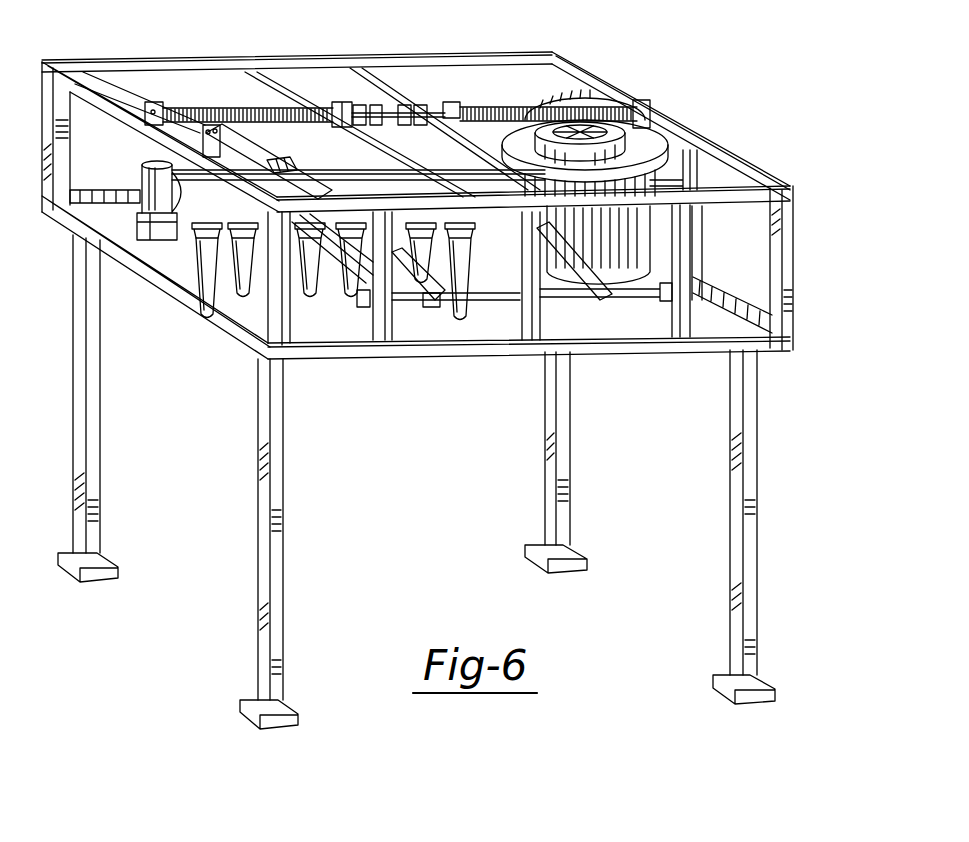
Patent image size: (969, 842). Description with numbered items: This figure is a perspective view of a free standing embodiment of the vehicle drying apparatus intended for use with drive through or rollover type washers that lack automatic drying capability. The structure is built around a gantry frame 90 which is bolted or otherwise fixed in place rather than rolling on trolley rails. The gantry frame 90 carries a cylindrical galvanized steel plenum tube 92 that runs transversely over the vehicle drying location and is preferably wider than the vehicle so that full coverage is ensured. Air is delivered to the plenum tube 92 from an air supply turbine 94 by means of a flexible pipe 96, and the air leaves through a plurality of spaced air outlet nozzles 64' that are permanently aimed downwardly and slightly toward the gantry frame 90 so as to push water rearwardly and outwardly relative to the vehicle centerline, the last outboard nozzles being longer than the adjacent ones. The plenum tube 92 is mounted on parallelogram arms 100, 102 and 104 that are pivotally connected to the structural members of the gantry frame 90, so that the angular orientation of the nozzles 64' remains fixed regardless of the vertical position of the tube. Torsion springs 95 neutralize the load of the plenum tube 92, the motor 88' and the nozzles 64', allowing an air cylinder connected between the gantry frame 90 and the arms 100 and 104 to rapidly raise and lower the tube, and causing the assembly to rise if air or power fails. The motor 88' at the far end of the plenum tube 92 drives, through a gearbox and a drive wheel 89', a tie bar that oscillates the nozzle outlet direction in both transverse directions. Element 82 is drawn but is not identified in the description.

The gantry frame 90 is at (188, 60).
The torsion springs 95 is at (483, 107).
The flexible pipe 96 is at (580, 98).
The air supply turbine 94 is at (652, 140).
The parallelogram arm 102 is at (240, 150).
The parallelogram arm 104 is at (353, 150).
The motor 88' is at (129, 178).
The drive wheel 89' is at (100, 246).
The plenum tube 92 is at (198, 253).
The nozzle 82 is at (197, 207).
The air outlet nozzles 64' is at (230, 294).
The parallelogram arm 100 is at (587, 298).